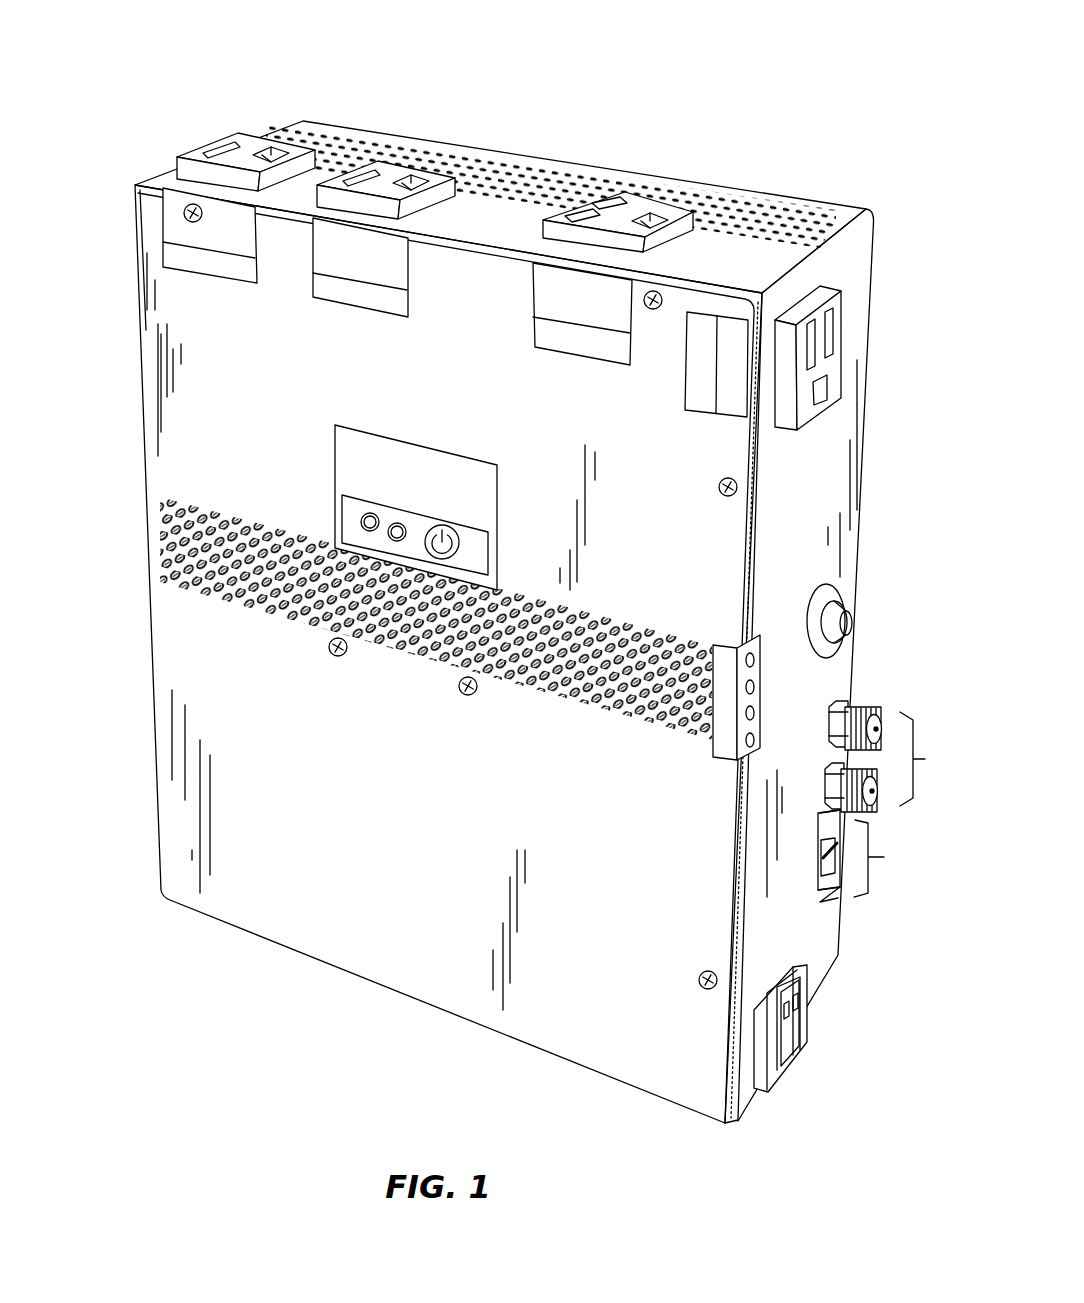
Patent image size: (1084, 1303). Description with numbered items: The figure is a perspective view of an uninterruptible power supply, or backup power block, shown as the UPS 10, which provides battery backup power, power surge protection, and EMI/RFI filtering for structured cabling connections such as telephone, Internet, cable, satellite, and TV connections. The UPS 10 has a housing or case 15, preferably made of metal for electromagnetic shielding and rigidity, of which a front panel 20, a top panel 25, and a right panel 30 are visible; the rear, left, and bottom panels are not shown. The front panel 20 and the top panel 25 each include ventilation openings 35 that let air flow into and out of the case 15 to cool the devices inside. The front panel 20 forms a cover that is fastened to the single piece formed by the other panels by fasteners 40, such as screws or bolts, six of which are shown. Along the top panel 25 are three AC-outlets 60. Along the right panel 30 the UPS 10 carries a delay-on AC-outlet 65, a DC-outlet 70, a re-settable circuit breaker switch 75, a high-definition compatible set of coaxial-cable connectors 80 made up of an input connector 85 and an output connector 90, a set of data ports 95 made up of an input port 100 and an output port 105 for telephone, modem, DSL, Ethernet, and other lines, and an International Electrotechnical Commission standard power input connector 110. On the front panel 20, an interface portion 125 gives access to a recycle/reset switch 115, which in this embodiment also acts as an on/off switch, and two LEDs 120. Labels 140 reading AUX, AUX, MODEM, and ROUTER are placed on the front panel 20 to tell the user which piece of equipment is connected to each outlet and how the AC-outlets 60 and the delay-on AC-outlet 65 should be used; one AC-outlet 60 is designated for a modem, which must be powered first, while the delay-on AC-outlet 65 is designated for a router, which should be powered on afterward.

The UPS 10 is at (772, 60).
The case 15 is at (137, 452).
The front panel 20 is at (331, 939).
The top panel 25 is at (776, 200).
The right panel 30 is at (813, 478).
The ventilation openings 35 is at (518, 168).
The fasteners 40 is at (186, 220).
The AC-outlets 60 is at (226, 150).
The delay-on AC-outlet 65 is at (834, 358).
The DC-outlet 70 is at (726, 758).
The re-settable circuit breaker switch 75 is at (846, 624).
The set of coaxial-cable connectors 80 is at (927, 759).
The input connector 85 is at (880, 797).
The output connector 90 is at (880, 722).
The set of data ports 95 is at (885, 858).
The input port 100 is at (826, 887).
The output port 105 is at (821, 819).
The power input connector 110 is at (782, 1046).
The recycle/reset switch 115 is at (448, 522).
The LEDs 120 is at (390, 498).
The interface portion 125 is at (318, 489).
The labels 140 is at (242, 284).